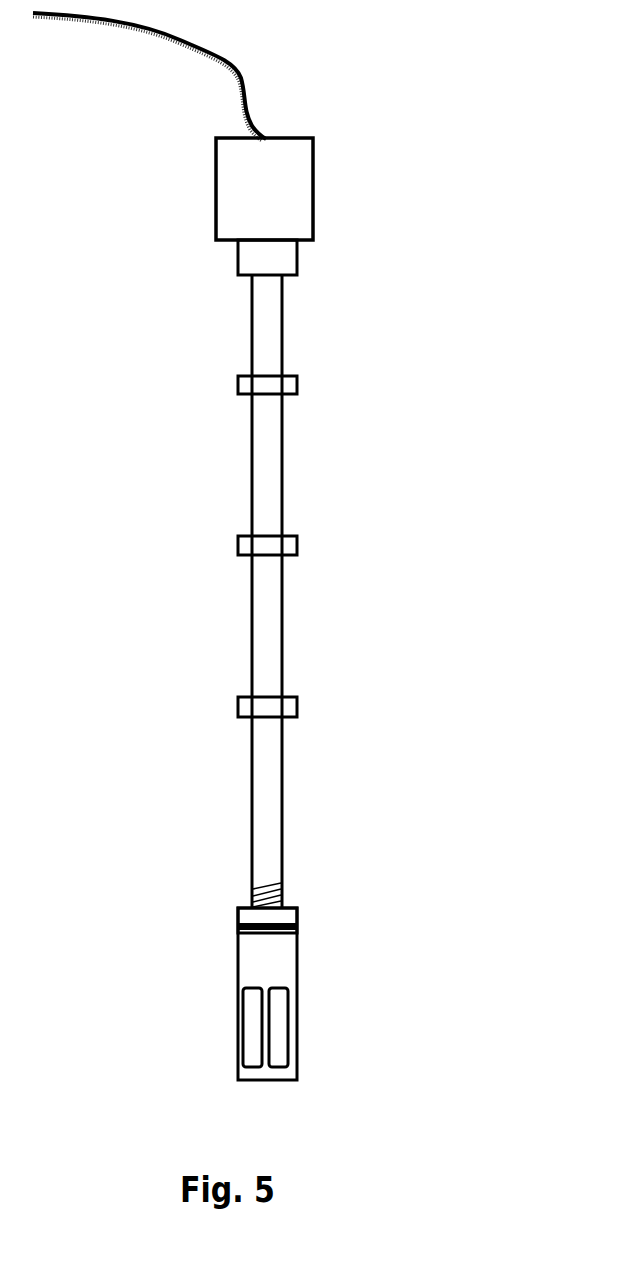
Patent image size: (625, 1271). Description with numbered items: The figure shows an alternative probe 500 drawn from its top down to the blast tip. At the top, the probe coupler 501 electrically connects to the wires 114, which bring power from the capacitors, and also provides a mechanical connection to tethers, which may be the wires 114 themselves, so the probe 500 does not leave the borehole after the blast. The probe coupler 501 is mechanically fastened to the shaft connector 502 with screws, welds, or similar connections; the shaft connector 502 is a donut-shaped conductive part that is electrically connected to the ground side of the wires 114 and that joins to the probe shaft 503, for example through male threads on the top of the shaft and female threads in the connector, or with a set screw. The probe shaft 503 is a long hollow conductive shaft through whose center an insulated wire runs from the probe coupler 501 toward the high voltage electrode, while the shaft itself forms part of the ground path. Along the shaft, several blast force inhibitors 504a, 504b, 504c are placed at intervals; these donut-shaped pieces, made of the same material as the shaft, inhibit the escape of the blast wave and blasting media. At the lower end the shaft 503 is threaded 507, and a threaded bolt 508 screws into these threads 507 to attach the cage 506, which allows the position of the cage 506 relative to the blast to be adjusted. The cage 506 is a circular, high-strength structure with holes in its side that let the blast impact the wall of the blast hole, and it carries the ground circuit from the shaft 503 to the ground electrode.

The wires 114 is at (183, 40).
The probe 500 is at (467, 110).
The probe coupler 501 is at (264, 189).
The shaft connector 502 is at (267, 257).
The probe shaft 503 is at (265, 340).
The blast force inhibitor 504a is at (263, 386).
The blast force inhibitor 504b is at (263, 544).
The blast force inhibitor 504c is at (263, 708).
The cage 506 is at (267, 994).
The threads 507 is at (265, 887).
The threaded bolt 508 is at (253, 918).